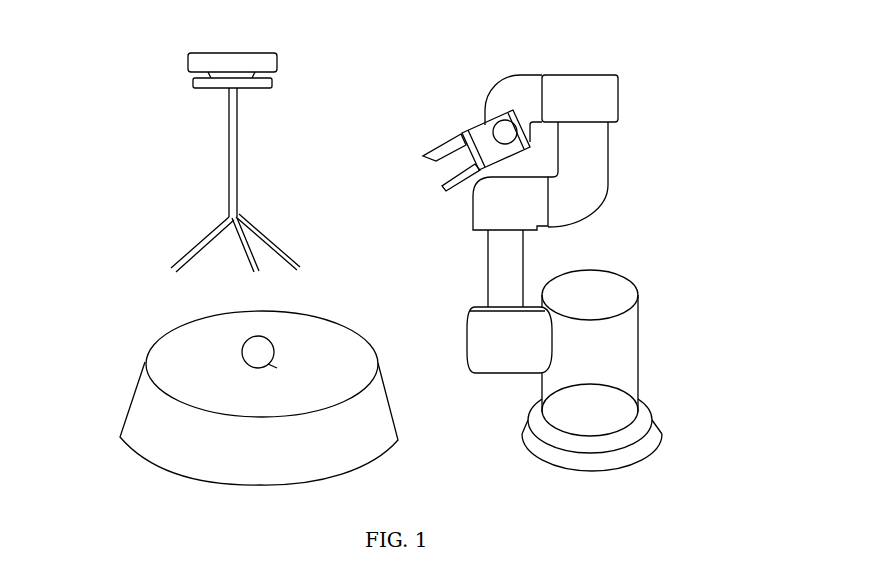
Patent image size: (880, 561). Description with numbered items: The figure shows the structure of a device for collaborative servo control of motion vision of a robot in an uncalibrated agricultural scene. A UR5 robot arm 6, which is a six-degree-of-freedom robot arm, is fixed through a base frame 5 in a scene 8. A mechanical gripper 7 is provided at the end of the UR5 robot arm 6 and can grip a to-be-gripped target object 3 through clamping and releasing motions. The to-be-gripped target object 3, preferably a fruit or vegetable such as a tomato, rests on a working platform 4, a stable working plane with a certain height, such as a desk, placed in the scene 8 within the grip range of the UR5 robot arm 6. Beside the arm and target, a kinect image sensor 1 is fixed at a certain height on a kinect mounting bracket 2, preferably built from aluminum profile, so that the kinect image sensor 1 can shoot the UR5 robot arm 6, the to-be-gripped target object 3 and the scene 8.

The kinect image sensor 1 is at (180, 72).
The kinect mounting bracket 2 is at (207, 210).
The to-be-gripped target object 3 is at (237, 342).
The working platform 4 is at (127, 400).
The base frame 5 is at (658, 443).
The UR5 robot arm 6 is at (613, 195).
The mechanical gripper 7 is at (442, 142).
The scene 8 is at (365, 152).